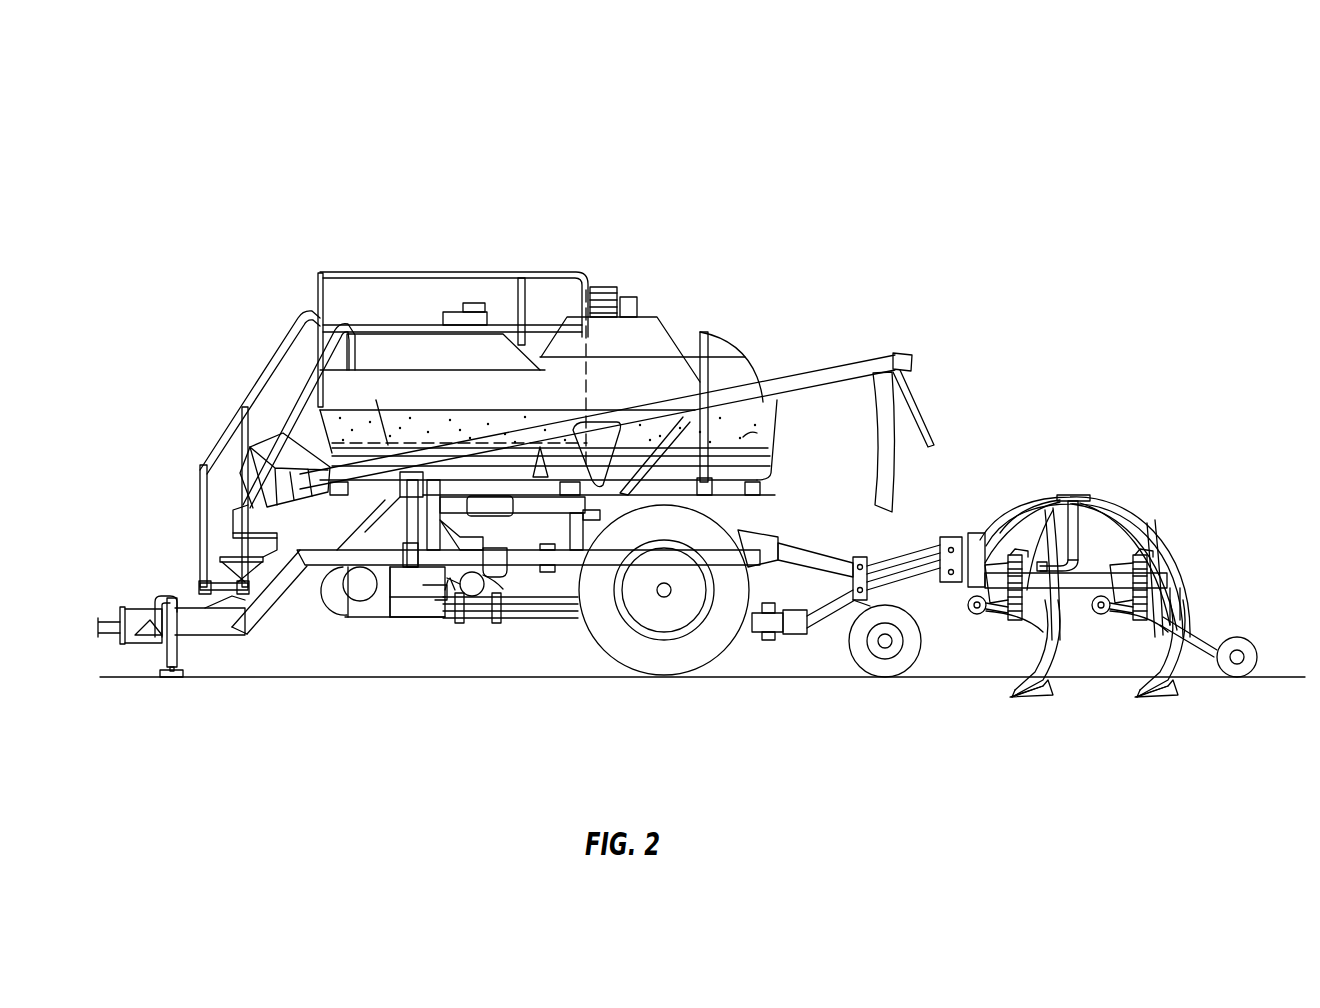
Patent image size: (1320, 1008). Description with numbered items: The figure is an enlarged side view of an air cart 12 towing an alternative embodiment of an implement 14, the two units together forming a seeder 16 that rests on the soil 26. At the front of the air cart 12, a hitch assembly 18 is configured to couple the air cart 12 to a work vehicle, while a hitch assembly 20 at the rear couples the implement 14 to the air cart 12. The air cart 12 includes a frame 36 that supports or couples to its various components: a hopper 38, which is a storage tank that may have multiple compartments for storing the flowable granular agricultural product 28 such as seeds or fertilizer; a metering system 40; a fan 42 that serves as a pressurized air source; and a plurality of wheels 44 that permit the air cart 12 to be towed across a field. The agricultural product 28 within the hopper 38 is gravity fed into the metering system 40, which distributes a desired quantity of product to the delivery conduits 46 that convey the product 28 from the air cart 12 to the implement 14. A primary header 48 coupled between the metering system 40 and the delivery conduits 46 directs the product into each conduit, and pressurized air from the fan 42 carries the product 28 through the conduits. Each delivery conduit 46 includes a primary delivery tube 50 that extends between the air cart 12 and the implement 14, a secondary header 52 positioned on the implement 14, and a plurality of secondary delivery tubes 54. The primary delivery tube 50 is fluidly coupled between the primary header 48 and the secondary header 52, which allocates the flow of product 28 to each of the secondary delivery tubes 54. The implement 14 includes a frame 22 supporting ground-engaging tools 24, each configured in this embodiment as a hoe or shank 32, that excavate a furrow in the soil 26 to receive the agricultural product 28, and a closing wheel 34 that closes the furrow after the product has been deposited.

The air cart 12 is at (486, 162).
The implement 14 is at (1108, 420).
The seeder 16 is at (702, 404).
The hitch assembly 18 is at (205, 620).
The hitch assembly 20 is at (823, 618).
The frame 22 is at (1073, 593).
The ground-engaging tool 24 is at (1026, 712).
The soil 26 is at (942, 680).
The agricultural product 28 is at (770, 440).
The hoe or shank 32 is at (1048, 690).
The closing wheel 34 is at (1229, 614).
The frame 36 is at (330, 575).
The hopper 38 is at (440, 352).
The metering system 40 is at (437, 655).
The fan 42 is at (350, 600).
The wheel 44 is at (665, 660).
The delivery conduit 46 is at (786, 494).
The primary header 48 is at (470, 605).
The primary delivery tube 50 is at (520, 628).
The secondary header 52 is at (1087, 495).
The secondary delivery tube 54 is at (1048, 505).